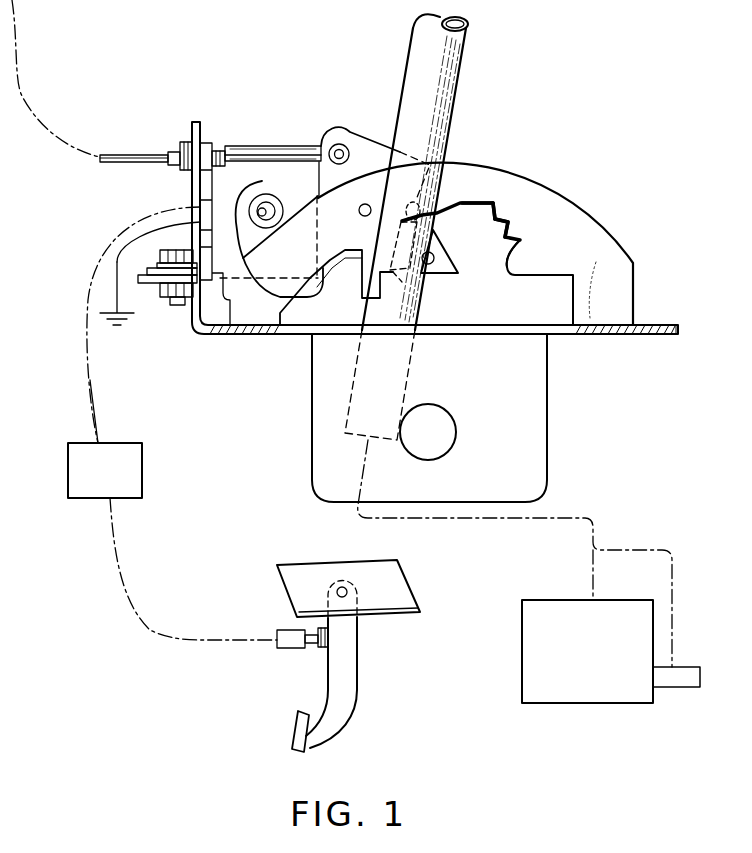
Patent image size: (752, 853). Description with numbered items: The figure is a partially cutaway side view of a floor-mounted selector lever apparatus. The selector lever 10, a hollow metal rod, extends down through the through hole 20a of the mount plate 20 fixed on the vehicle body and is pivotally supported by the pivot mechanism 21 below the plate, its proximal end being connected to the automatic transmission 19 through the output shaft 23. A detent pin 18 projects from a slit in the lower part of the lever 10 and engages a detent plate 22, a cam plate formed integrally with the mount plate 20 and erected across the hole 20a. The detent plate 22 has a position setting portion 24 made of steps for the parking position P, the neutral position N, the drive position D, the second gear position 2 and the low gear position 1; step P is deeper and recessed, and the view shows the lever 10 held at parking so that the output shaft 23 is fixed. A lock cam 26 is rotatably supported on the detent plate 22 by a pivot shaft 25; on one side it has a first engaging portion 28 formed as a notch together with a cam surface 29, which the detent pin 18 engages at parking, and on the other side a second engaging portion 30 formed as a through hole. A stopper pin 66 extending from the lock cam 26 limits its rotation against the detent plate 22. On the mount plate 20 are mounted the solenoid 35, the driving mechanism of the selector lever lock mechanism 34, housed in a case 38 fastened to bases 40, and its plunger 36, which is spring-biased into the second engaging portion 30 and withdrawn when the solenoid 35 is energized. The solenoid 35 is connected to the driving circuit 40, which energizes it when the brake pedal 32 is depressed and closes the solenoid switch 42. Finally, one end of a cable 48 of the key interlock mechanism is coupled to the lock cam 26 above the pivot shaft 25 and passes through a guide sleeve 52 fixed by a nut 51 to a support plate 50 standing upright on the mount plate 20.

The selector lever 10 is at (456, 67).
The detent pin 18 is at (460, 201).
The neutral position N is at (473, 202).
The drive position D is at (498, 203).
The parking position P is at (411, 201).
The low gear position 1 is at (516, 258).
The second gear position 2 is at (512, 230).
The automatic transmission 19 is at (557, 690).
The mount plate 20 is at (653, 335).
The through hole 20a is at (568, 335).
The pivot mechanism 21 is at (456, 432).
The detent plate 22 is at (532, 198).
The output shaft 23 is at (681, 667).
The position setting portion 24 is at (492, 300).
The pivot shaft 25 is at (360, 213).
The lock cam 26 is at (351, 132).
The first engaging portion 28 is at (344, 287).
The cam surface 29 is at (454, 262).
The second engaging portion 30 is at (250, 252).
The brake pedal 32 is at (351, 679).
The selector lever lock mechanism 34 is at (261, 139).
The solenoid 35 is at (287, 147).
The plunger 36 is at (265, 207).
The case 38 is at (320, 146).
The driving circuit 40 is at (148, 290).
The solenoid switch 42 is at (293, 648).
The cable 48 is at (123, 155).
The support plate 50 is at (192, 190).
The nut 51 is at (214, 150).
The guide sleeve 52 is at (172, 143).
The stopper pin 66 is at (437, 268).